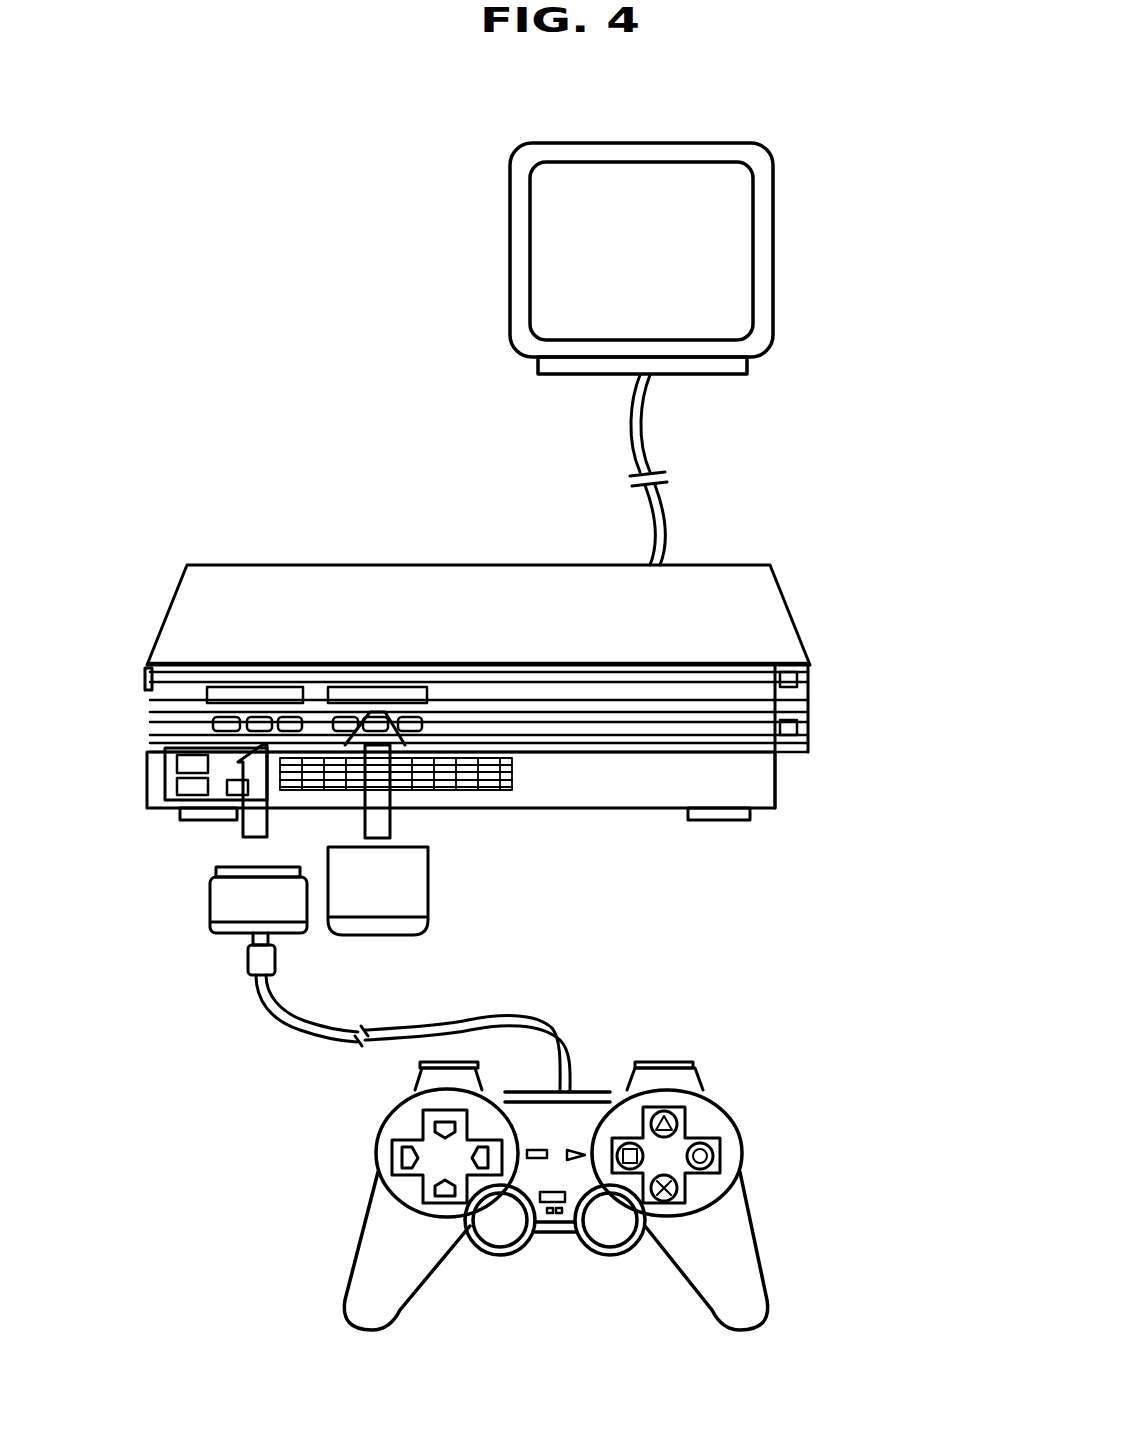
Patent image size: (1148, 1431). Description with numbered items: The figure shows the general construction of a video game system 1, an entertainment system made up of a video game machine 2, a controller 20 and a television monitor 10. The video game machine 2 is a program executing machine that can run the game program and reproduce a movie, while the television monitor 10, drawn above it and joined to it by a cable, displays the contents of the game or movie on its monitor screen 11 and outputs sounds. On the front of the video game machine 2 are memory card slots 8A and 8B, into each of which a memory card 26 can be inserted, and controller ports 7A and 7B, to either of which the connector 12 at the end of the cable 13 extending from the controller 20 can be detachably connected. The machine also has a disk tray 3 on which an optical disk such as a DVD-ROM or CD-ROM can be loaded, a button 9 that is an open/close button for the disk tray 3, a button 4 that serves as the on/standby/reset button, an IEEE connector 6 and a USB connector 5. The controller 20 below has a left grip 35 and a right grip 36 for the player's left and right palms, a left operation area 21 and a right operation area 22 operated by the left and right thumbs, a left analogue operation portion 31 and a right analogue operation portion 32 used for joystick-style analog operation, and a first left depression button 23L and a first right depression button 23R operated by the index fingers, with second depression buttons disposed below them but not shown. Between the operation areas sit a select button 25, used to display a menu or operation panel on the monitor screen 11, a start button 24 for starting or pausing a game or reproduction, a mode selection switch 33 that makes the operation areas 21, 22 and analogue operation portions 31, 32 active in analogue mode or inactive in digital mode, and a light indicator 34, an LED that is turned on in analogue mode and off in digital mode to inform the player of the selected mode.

The video game system 1 is at (695, 893).
The video game machine 2 is at (745, 580).
The disk tray 3 is at (635, 720).
The button 4 is at (780, 672).
The USB connector 5 is at (185, 762).
The IEEE 1394 connector 6 is at (232, 790).
The controller port 7A is at (200, 715).
The controller port 7B is at (430, 698).
The memory card slot 8A is at (278, 694).
The memory card slot 8B is at (375, 710).
The button 9 is at (785, 737).
The television monitor 10 is at (752, 160).
The display screen 11 is at (635, 185).
The connector 12 is at (235, 905).
The cable 13 is at (285, 1026).
The controller 20 is at (740, 1212).
The left operation area 21 is at (405, 1123).
The right operation area 22 is at (697, 1122).
The first left depression button 23L is at (447, 1052).
The first right depression button 23R is at (665, 1060).
The start button 24 is at (573, 1147).
The select button 25 is at (538, 1148).
The memory card 26 is at (395, 890).
The left analogue operation portion 31 is at (485, 1245).
The right analogue operation portion 32 is at (620, 1232).
The mode selection switch 33 is at (548, 1204).
The light indicator 34 is at (552, 1216).
The left grip 35 is at (373, 1270).
The right grip 36 is at (743, 1268).